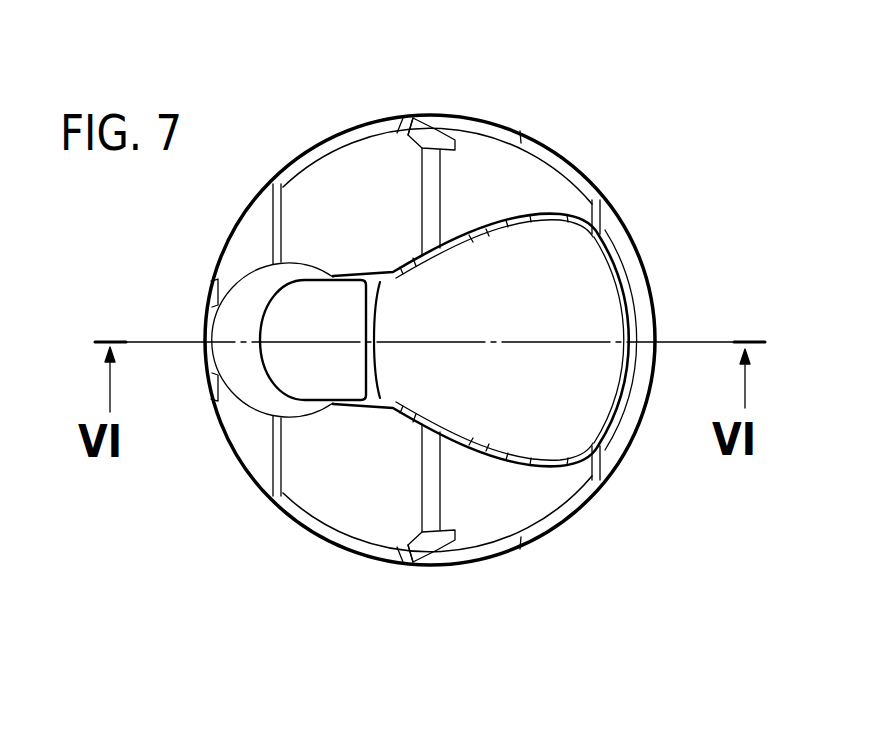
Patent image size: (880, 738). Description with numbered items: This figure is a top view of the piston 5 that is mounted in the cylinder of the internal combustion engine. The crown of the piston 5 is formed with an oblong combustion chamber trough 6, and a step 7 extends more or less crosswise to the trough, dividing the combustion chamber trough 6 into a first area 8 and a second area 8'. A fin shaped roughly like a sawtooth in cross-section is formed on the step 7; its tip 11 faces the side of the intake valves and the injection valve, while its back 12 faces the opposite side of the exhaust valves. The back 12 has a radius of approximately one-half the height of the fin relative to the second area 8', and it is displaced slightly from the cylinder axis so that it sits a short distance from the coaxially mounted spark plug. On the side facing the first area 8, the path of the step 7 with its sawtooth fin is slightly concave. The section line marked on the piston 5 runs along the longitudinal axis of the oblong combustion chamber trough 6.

The piston 5 is at (660, 255).
The combustion chamber trough 6 is at (452, 298).
The step 7 is at (363, 307).
The first area 8 is at (501, 466).
The second area 8' is at (289, 460).
The tip 11 is at (358, 362).
The back 12 is at (393, 384).